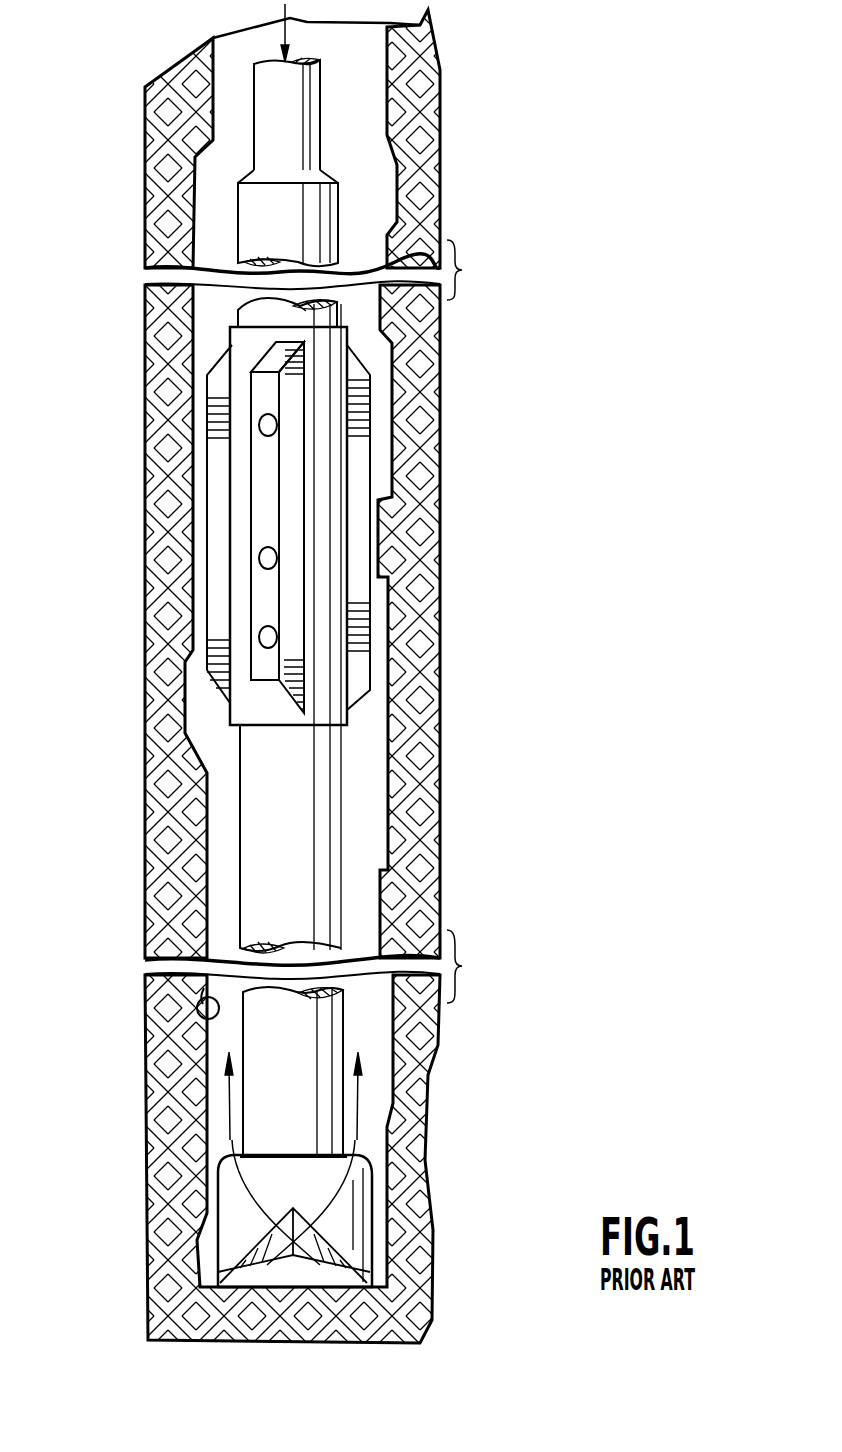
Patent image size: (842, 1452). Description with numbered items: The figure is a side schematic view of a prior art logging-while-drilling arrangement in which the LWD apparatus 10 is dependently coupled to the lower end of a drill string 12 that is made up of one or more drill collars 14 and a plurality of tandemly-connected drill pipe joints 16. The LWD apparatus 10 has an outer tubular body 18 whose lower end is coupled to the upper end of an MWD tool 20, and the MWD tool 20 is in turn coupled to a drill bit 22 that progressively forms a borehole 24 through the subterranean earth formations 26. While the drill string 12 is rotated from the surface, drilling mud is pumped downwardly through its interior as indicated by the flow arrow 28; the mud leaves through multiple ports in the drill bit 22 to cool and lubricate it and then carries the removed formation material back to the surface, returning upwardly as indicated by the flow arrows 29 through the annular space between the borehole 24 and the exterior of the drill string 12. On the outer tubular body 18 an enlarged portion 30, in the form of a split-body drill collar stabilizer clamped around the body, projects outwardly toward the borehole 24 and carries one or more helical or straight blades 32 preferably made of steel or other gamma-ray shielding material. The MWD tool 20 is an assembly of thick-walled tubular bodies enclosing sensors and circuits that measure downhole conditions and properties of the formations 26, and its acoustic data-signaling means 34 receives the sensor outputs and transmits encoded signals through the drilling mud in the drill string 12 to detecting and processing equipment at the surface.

The LWD apparatus 10 is at (352, 628).
The drill string 12 is at (250, 162).
The drill collar 14 is at (340, 307).
The drill pipe joint 16 is at (318, 145).
The outer tubular body 18 is at (350, 473).
The MWD tool 20 is at (343, 900).
The drill bit 22 is at (370, 1226).
The borehole 24 is at (197, 1037).
The earth formations 26 is at (150, 1152).
The flow arrow 28 is at (285, 13).
The flow arrows 29 is at (360, 1108).
The enlarged portion 30 is at (230, 440).
The blades 32 is at (277, 435).
The acoustic data-signaling means 34 is at (265, 778).